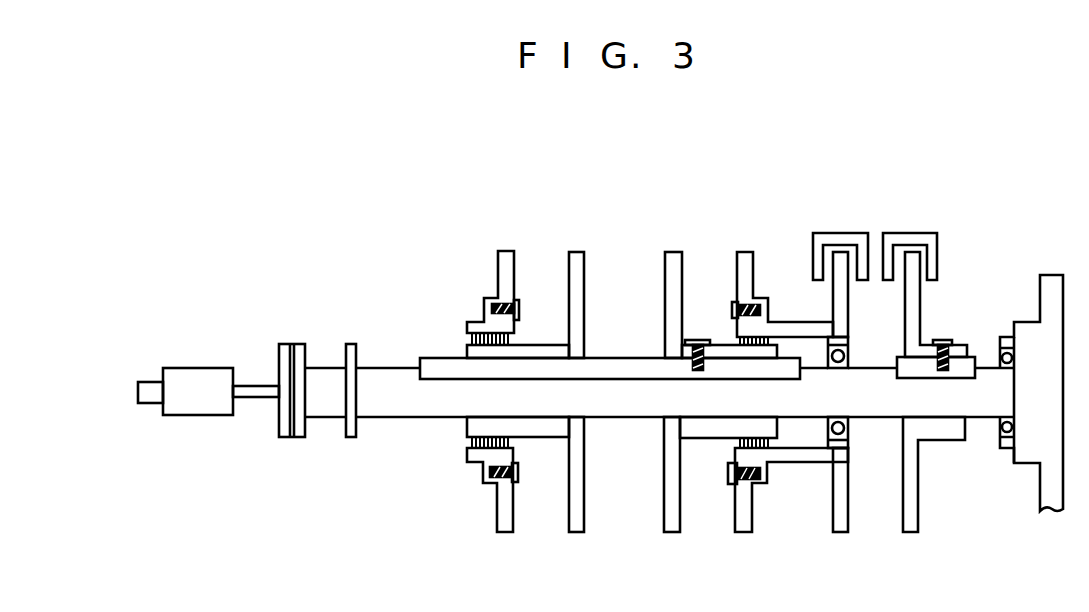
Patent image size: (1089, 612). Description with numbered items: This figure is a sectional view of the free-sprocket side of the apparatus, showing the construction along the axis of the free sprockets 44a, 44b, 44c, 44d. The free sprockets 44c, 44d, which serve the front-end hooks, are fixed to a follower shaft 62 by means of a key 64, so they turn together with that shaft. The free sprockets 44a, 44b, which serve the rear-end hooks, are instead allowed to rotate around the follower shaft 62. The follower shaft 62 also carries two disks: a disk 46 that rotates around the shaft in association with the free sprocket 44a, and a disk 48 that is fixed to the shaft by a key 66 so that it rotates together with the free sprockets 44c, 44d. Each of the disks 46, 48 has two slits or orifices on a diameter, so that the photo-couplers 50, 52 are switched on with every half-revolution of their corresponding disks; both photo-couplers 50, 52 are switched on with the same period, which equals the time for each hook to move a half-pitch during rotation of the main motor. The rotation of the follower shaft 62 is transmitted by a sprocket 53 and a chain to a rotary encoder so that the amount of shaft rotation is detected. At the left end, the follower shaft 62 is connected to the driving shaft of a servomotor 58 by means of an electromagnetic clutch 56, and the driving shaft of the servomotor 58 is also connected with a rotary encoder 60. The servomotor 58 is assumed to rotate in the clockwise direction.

The free sprocket 44a is at (745, 252).
The free sprocket 44b is at (507, 251).
The free sprocket 44c is at (676, 252).
The free sprocket 44d is at (578, 252).
The disk 46 is at (850, 298).
The disk 48 is at (920, 298).
The photo-coupler 50 is at (840, 233).
The photo-coupler 52 is at (918, 233).
The sprocket 53 is at (356, 344).
The electromagnetic clutch 56 is at (292, 344).
The servomotor 58 is at (198, 368).
The rotary encoder 60 is at (148, 403).
The follower shaft 62 is at (410, 410).
The key 64 is at (621, 366).
The key 66 is at (968, 364).